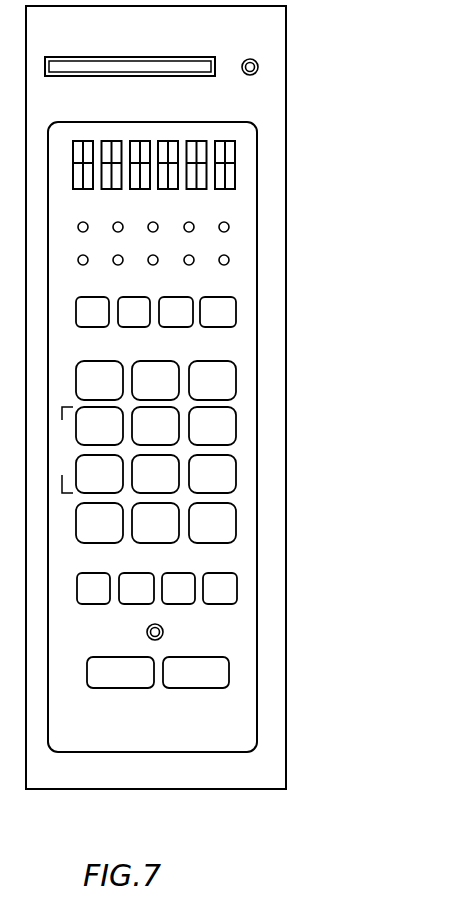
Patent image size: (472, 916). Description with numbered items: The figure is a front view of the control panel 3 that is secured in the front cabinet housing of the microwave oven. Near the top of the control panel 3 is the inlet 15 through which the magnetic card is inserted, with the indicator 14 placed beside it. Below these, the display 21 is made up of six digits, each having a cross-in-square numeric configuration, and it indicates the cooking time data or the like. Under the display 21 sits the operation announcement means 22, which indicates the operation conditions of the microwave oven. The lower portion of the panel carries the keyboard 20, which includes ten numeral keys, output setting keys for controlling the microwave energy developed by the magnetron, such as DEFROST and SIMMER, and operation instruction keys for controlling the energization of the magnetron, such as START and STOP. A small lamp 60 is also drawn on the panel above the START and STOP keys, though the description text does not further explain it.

The control panel 3 is at (344, 109).
The inlet 15 is at (207, 57).
The indicator 14 is at (258, 66).
The display 21 is at (241, 159).
The operation announcement means 22 is at (247, 235).
The keyboard 20 is at (198, 437).
The cook lamp 60 is at (165, 632).